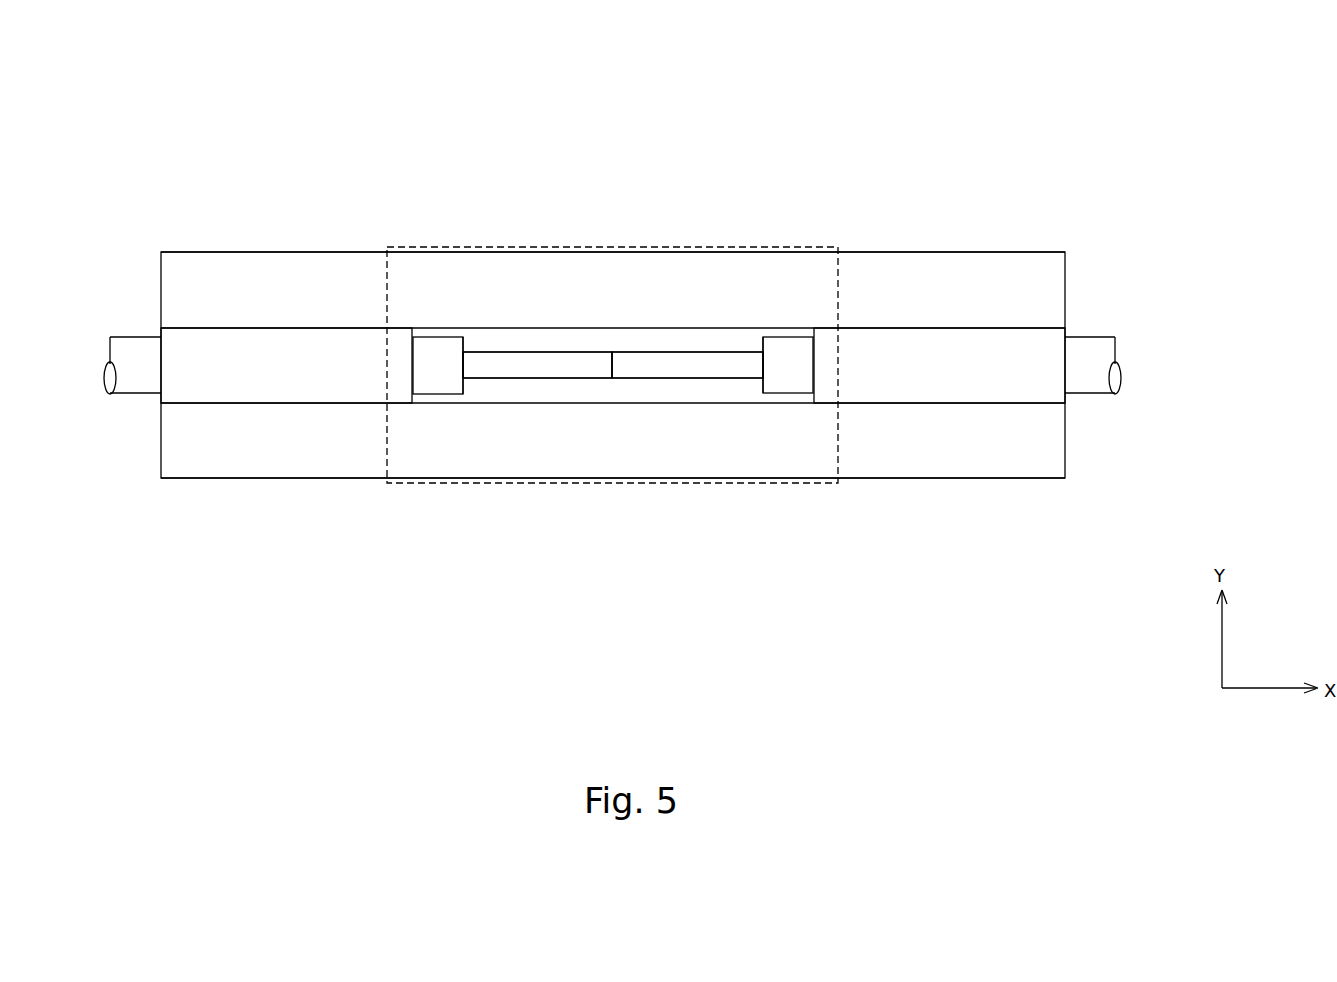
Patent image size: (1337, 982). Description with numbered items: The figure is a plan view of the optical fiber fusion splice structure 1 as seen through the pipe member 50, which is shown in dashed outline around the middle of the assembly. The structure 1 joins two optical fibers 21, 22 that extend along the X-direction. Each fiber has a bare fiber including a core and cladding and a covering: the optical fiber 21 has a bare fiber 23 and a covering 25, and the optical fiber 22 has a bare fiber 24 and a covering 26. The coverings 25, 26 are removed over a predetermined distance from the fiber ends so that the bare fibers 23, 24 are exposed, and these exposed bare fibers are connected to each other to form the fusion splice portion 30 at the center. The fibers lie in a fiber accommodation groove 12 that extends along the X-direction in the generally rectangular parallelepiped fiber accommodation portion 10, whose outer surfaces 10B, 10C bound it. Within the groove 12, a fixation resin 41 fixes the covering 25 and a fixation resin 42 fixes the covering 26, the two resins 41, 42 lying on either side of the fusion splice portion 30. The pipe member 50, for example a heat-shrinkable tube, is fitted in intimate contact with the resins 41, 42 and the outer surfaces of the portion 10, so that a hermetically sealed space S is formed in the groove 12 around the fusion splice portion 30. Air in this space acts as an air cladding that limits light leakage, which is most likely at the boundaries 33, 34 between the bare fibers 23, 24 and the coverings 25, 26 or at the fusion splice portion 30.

The optical fiber fusion splice structure 1 is at (1097, 120).
The fiber accommodation portion 10 is at (988, 252).
The outer surface of fiber accommodation portion 10B is at (328, 479).
The outer surface of fiber accommodation portion 10C is at (330, 252).
The fiber accommodation groove 12 is at (1030, 328).
The optical fiber 21 is at (126, 406).
The optical fiber 22 is at (1099, 406).
The bare fiber 23 is at (543, 358).
The bare fiber 24 is at (710, 362).
The covering 25 is at (437, 356).
The covering 26 is at (792, 352).
The fusion splice portion 30 is at (612, 348).
The boundary 33 is at (472, 342).
The boundary 34 is at (752, 342).
The fixation resin 41 is at (262, 356).
The fixation resin 42 is at (930, 356).
The pipe member 50 is at (536, 484).